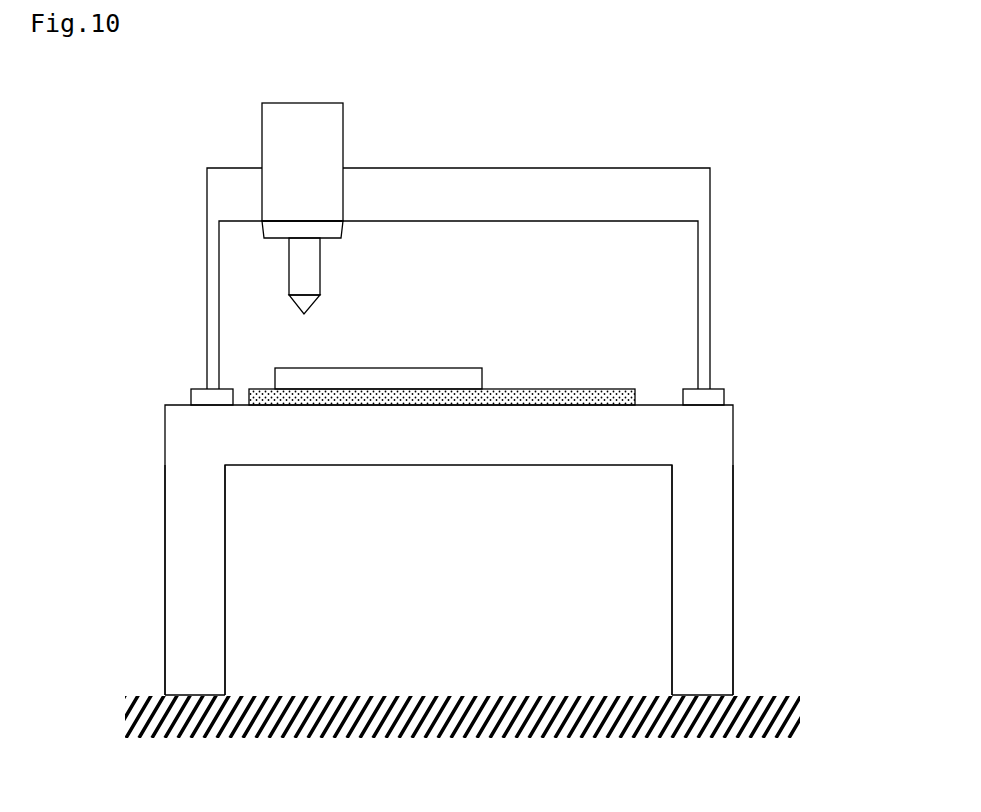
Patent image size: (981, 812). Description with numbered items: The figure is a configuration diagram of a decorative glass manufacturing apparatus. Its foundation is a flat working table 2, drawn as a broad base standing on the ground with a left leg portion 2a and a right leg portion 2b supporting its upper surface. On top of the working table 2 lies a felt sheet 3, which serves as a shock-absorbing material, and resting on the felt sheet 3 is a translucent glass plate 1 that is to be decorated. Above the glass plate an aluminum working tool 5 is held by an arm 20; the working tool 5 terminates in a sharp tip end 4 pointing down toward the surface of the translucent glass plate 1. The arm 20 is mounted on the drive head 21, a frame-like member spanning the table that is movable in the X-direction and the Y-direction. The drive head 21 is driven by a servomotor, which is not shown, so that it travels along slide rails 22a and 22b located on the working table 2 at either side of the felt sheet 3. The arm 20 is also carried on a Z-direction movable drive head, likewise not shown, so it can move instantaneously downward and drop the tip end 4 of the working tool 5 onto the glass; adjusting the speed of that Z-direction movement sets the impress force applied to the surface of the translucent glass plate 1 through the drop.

The translucent glass plate 1 is at (483, 373).
The working table 2 is at (190, 437).
The left leg of base 2a is at (190, 565).
The right leg of base 2b is at (717, 640).
The felt sheet 3 is at (248, 396).
The sharp tip end 4 is at (308, 303).
The working tool 5 is at (315, 265).
The arm 20 is at (335, 128).
The drive head 21 is at (552, 178).
The slide rail 22a is at (191, 396).
The slide rail 22b is at (717, 396).